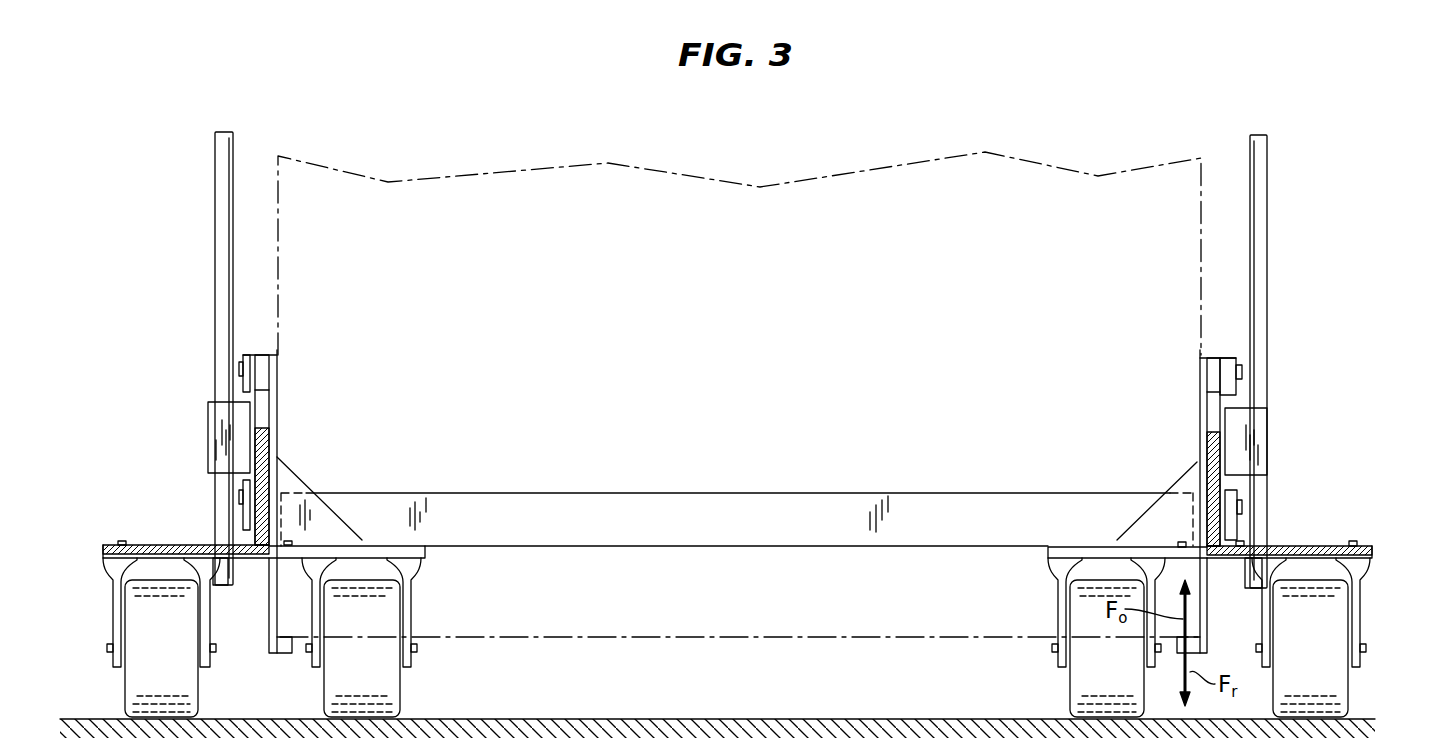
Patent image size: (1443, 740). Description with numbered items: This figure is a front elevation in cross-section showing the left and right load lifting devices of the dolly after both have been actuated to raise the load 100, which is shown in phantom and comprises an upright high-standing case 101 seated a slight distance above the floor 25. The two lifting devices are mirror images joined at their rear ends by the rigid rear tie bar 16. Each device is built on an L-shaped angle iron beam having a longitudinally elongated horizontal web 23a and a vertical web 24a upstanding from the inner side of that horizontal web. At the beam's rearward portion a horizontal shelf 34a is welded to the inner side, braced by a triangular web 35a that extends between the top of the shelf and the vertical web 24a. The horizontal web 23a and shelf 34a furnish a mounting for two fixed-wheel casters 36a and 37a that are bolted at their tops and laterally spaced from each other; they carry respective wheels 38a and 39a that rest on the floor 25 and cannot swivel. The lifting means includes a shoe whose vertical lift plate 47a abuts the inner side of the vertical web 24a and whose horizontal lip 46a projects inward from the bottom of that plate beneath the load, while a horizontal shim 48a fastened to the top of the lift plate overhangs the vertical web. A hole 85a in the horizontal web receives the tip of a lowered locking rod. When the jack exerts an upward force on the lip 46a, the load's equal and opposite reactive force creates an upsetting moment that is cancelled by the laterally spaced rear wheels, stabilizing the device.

The load 100 is at (760, 141).
The case 101 is at (712, 640).
The rear tie bar 16 is at (742, 502).
The horizontal web 23a is at (1323, 546).
The vertical web 24a is at (1211, 448).
The floor 25 is at (1028, 718).
The horizontal shelf 34a is at (1066, 547).
The triangular web 35a is at (1174, 483).
The caster 36a is at (1368, 598).
The caster 37a is at (1058, 594).
The wheel 38a is at (1330, 688).
The wheel 39a is at (1068, 690).
The horizontal lip 46a is at (1189, 649).
The vertical lift plate 47a is at (1202, 408).
The horizontal shim 48a is at (1213, 361).
The hole 85a is at (1255, 540).